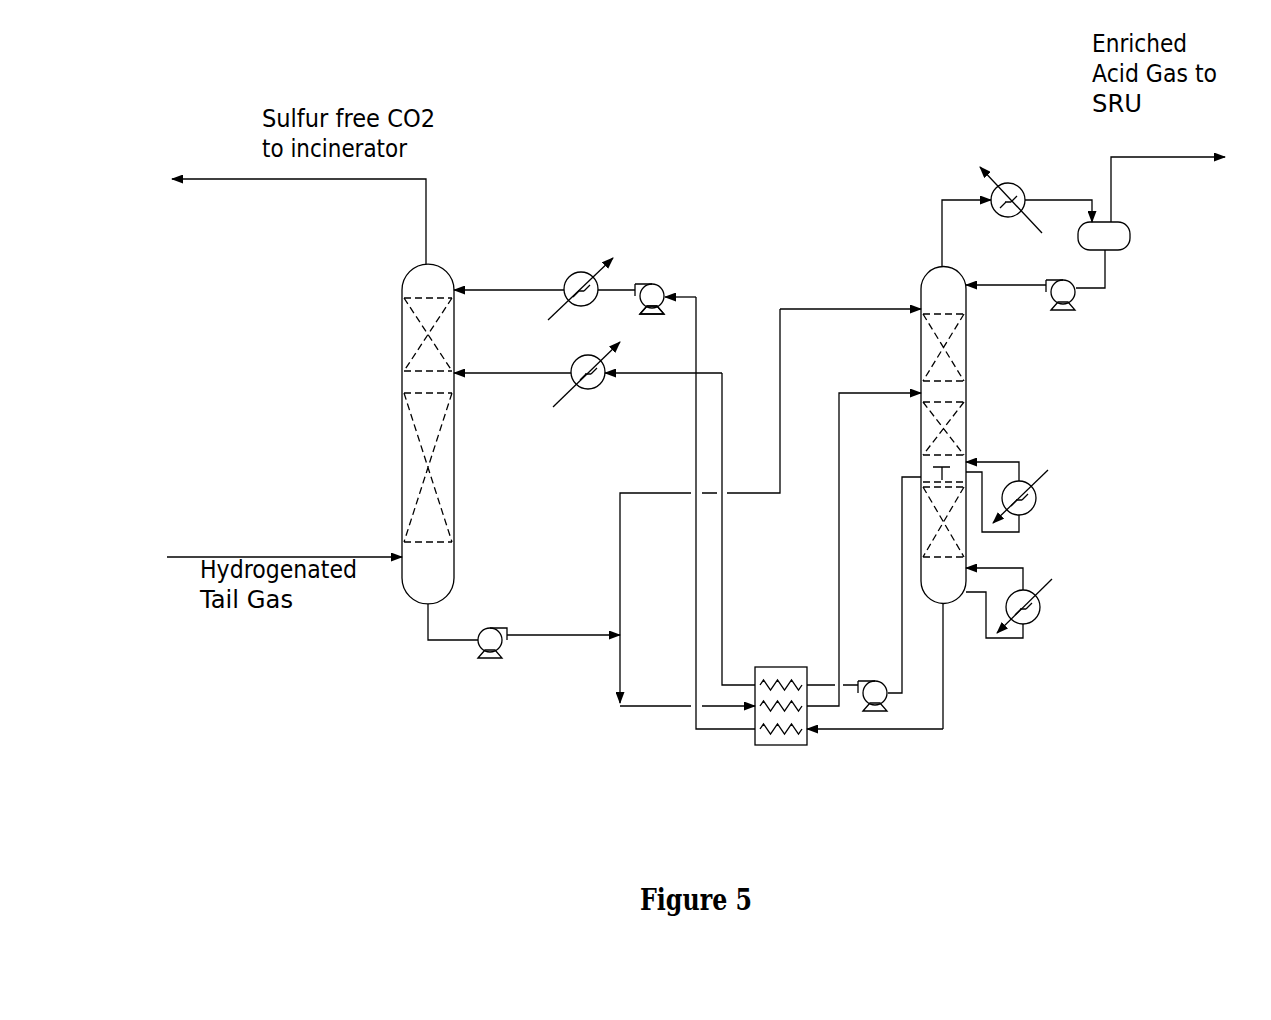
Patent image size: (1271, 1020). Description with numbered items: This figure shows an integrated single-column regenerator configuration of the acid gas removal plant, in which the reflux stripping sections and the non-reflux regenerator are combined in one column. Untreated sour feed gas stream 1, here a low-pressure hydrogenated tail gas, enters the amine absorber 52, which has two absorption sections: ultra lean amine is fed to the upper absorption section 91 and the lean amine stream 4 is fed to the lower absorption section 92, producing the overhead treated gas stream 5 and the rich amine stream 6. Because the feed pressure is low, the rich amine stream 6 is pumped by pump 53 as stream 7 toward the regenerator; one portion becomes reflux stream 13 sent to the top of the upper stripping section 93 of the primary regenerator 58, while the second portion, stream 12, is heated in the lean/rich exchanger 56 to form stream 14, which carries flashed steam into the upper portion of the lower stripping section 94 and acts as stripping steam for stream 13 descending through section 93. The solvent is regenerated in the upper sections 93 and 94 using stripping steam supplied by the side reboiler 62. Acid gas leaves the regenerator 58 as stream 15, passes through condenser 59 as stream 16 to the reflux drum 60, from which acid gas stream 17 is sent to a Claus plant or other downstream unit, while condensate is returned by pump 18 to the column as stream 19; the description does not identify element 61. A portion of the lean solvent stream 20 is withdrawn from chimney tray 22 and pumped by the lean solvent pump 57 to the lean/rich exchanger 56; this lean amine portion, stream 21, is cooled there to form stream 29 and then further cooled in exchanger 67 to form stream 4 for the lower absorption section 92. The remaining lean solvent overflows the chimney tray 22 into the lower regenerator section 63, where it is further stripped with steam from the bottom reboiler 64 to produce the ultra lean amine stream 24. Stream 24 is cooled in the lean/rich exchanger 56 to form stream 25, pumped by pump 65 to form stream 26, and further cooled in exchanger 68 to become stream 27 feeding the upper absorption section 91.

The untreated sour feed gas stream 1 is at (300, 557).
The lean amine stream 4 is at (478, 373).
The overhead treated gas stream 5 is at (233, 179).
The rich amine stream 6 is at (428, 637).
The rich amine stream 7 is at (577, 637).
The rich amine stream (second portion) 12 is at (673, 705).
The reflux stream 13 is at (870, 308).
The heated rich amine stream 14 is at (839, 540).
The acid gas stream 15 is at (942, 200).
The condensed overhead stream 16 is at (1087, 197).
The acid gas stream 17 is at (1175, 157).
The pump 18 is at (1097, 287).
The reflux stream 19 is at (1017, 283).
The lean amine stream 20 is at (902, 603).
The lean amine stream portion 21 is at (850, 683).
The chimney tray 22 is at (935, 473).
The ultra lean amine stream 24 is at (943, 680).
The cooled ultra lean solvent stream 25 is at (697, 365).
The pumped ultra lean solvent stream 26 is at (621, 290).
The ultra lean solvent stream 27 is at (534, 290).
The cooled lean amine stream 29 is at (722, 510).
The amine absorber 52 is at (402, 292).
The pump 53 is at (490, 628).
The lean/rich exchanger 56 is at (787, 667).
The lean solvent pump 57 is at (890, 712).
The primary regenerator 58 is at (927, 267).
The condenser 59 is at (1015, 183).
The reflux drum 60 is at (1133, 233).
The reflux pump base 61 is at (1070, 311).
The side reboiler 62 is at (1036, 497).
The lower regenerator section 63 is at (957, 527).
The bottom reboiler 64 is at (1038, 603).
The pump 65 is at (658, 284).
The exchanger 67 is at (601, 357).
The exchanger 68 is at (570, 273).
The upper absorption section 91 is at (402, 342).
The lower absorption section 92 is at (402, 428).
The upper stripping section 93 is at (967, 350).
The lower stripping section 94 is at (960, 437).